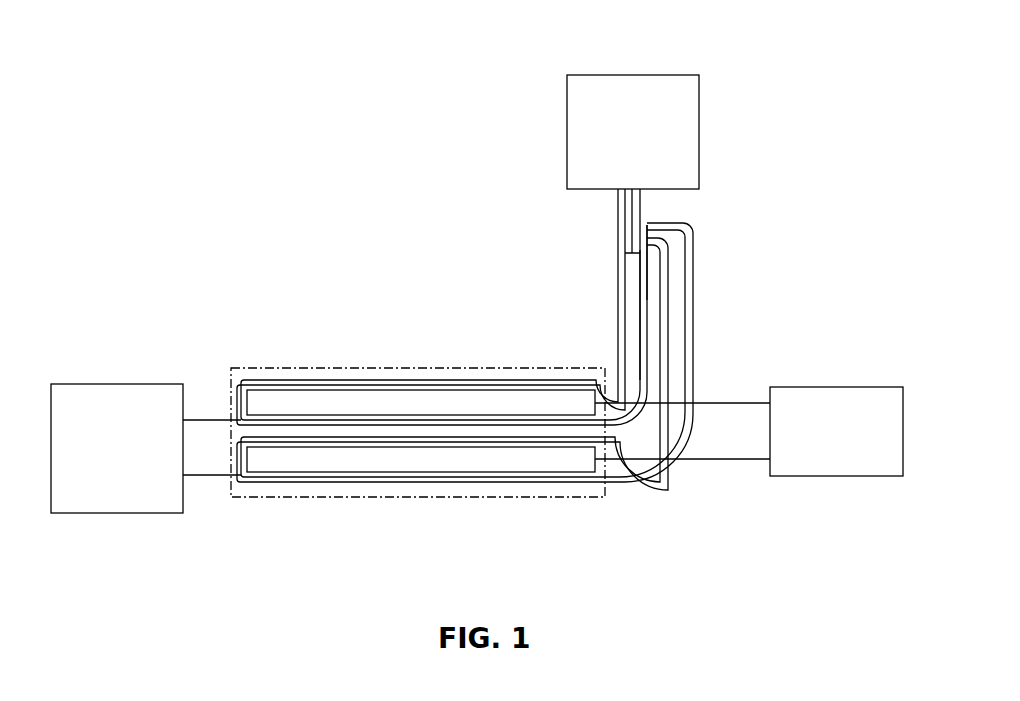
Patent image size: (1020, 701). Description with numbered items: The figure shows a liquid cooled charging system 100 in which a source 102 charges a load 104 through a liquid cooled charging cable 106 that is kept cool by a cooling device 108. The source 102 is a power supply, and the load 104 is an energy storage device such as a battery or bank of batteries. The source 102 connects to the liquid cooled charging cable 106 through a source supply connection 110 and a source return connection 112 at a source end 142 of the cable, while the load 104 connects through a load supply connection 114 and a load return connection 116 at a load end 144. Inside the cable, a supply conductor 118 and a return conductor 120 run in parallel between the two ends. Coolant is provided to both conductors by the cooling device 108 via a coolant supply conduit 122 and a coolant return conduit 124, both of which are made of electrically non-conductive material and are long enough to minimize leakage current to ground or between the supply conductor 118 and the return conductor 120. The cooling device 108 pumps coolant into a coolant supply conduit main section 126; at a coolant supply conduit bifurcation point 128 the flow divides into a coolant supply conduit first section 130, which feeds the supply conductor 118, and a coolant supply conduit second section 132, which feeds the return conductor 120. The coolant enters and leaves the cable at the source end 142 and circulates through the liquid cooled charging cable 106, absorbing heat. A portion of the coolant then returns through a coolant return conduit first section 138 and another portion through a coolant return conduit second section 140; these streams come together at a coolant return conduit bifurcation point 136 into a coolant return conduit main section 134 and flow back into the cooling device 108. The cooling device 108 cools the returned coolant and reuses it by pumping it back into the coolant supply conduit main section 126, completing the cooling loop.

The liquid cooled charging system 100 is at (140, 36).
The source 102 is at (831, 387).
The load 104 is at (116, 384).
The liquid cooled charging cable 106 is at (372, 498).
The cooling device 108 is at (636, 75).
The source supply connection 110 is at (736, 402).
The source return connection 112 is at (706, 461).
The load supply connection 114 is at (213, 418).
The load return connection 116 is at (208, 482).
The supply conductor 118 is at (366, 401).
The return conductor 120 is at (455, 461).
The coolant supply conduit 122 is at (507, 298).
The coolant return conduit 124 is at (537, 356).
The coolant supply conduit main section 126 is at (617, 238).
The coolant supply conduit bifurcation point 128 is at (622, 254).
The coolant supply conduit first section 130 is at (621, 315).
The coolant supply conduit second section 132 is at (667, 266).
The coolant return conduit main section 134 is at (647, 218).
The coolant return conduit bifurcation point 136 is at (653, 230).
The coolant return conduit first section 138 is at (640, 349).
The coolant return conduit second section 140 is at (694, 345).
The source end 142 is at (604, 508).
The load end 144 is at (241, 508).